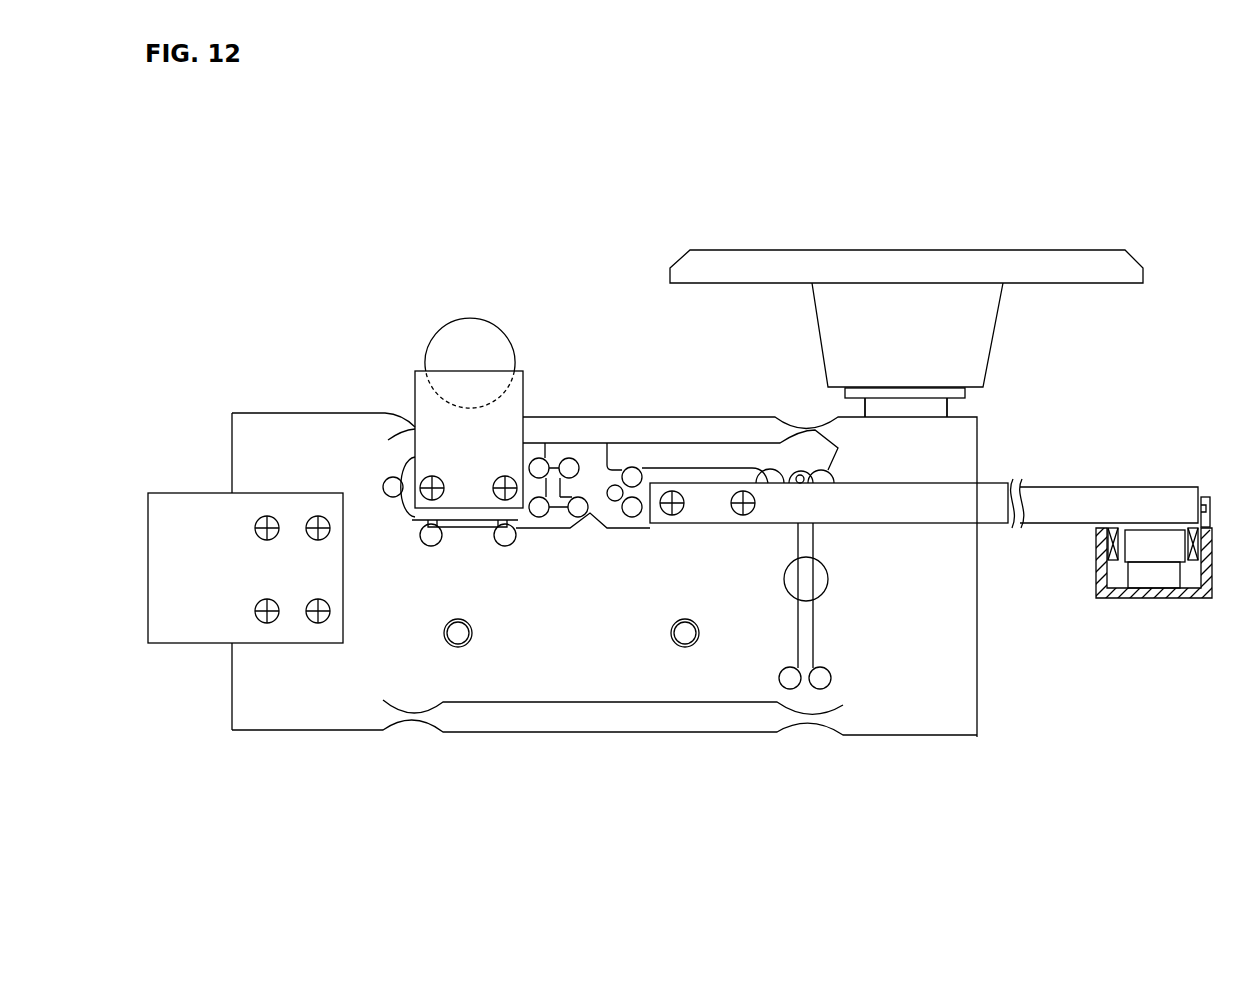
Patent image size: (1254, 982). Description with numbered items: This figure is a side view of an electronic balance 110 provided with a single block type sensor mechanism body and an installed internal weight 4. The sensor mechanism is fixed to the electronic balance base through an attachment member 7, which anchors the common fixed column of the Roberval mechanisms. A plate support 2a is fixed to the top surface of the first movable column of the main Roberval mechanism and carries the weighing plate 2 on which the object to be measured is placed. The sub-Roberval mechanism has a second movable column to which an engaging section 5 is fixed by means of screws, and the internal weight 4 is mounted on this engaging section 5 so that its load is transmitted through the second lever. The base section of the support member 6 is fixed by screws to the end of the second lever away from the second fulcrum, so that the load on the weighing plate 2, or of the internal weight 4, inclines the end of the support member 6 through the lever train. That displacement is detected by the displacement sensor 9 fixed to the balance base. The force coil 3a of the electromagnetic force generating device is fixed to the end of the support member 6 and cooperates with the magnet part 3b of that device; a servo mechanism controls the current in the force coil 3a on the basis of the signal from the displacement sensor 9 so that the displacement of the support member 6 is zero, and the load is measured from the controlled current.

The electronic balance 110 is at (650, 90).
The weighing plate 2 is at (908, 252).
The plate support 2a is at (927, 398).
The internal weight 4 is at (468, 345).
The engaging section 5 is at (448, 432).
The support member 6 is at (1040, 515).
The attachment member 7 is at (200, 527).
The displacement sensor 9 is at (1203, 497).
The force coil 3a is at (1115, 548).
The magnet 3b is at (1155, 548).